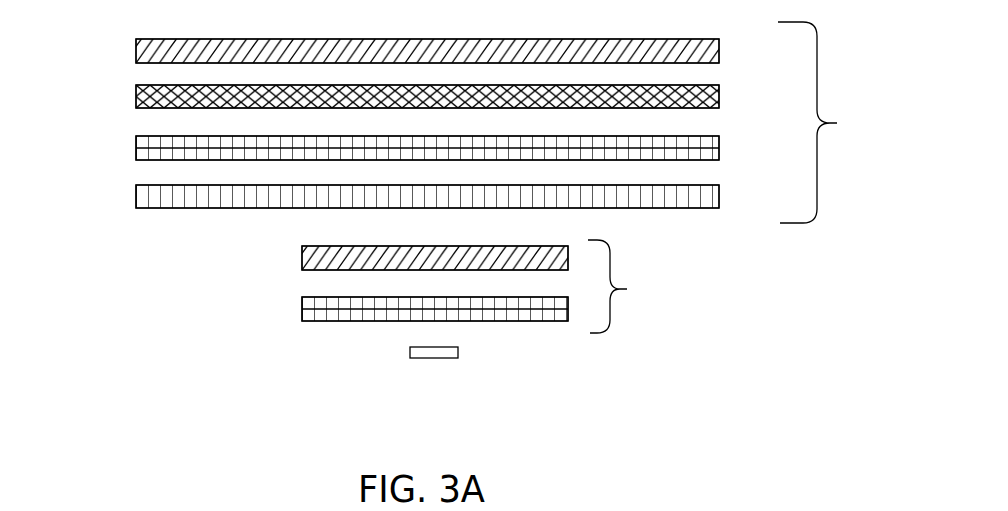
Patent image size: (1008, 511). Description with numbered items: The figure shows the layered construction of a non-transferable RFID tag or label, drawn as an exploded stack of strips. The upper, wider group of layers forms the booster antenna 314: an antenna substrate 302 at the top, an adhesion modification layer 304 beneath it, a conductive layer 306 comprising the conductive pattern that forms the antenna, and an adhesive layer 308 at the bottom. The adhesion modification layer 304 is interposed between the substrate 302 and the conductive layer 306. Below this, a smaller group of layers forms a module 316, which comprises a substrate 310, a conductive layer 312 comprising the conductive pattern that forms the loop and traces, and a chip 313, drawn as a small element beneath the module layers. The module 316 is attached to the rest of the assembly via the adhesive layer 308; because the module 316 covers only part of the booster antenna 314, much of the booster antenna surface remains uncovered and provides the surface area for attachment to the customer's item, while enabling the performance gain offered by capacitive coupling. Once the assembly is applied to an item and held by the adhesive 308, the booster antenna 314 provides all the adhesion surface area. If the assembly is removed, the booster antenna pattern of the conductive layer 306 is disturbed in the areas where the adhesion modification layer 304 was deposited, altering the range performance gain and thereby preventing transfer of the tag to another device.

The antenna substrate 302 is at (136, 52).
The adhesion modification layer 304 is at (137, 100).
The conductive layer 306 is at (136, 153).
The adhesive layer 308 is at (136, 200).
The substrate 310 is at (302, 258).
The conductive layer 312 is at (301, 297).
The chip 313 is at (410, 357).
The booster antenna 314 is at (484, 117).
The module 316 is at (464, 276).